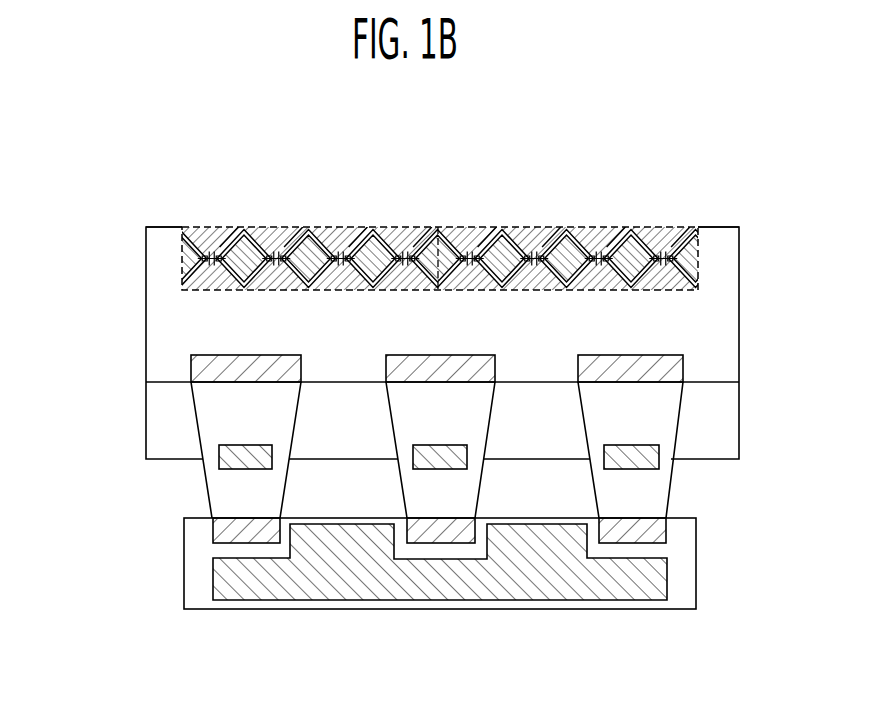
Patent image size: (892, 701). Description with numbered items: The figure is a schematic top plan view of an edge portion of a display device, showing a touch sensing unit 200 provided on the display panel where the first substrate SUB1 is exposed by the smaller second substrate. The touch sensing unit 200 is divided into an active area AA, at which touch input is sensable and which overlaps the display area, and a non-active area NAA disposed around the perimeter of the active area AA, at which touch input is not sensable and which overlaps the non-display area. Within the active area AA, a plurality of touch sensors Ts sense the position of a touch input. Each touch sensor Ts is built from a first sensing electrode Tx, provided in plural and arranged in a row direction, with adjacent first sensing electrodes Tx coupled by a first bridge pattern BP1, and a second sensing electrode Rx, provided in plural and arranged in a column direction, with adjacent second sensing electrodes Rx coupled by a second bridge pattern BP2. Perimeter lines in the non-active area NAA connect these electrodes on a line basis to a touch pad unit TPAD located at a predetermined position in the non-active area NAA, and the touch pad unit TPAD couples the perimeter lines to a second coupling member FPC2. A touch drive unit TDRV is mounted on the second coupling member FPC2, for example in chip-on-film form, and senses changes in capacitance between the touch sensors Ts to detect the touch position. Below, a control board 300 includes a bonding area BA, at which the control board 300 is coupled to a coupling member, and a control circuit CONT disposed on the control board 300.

The touch sensing unit 200 is at (168, 311).
The non-active area NAA is at (733, 241).
The active area AA is at (698, 250).
The first substrate SUB1 is at (733, 425).
The touch sensor Ts is at (438, 215).
The first sensing electrode Tx is at (184, 250).
The second sensing electrode Rx is at (213, 254).
The first bridge pattern BP1 is at (467, 218).
The second bridge pattern BP2 is at (250, 256).
The touch pad unit TPAD is at (202, 366).
The touch drive unit TDRV is at (226, 450).
The second coupling member FPC2 is at (222, 492).
The bonding area BA is at (222, 531).
The control board 300 is at (184, 572).
The control circuit CONT is at (288, 602).